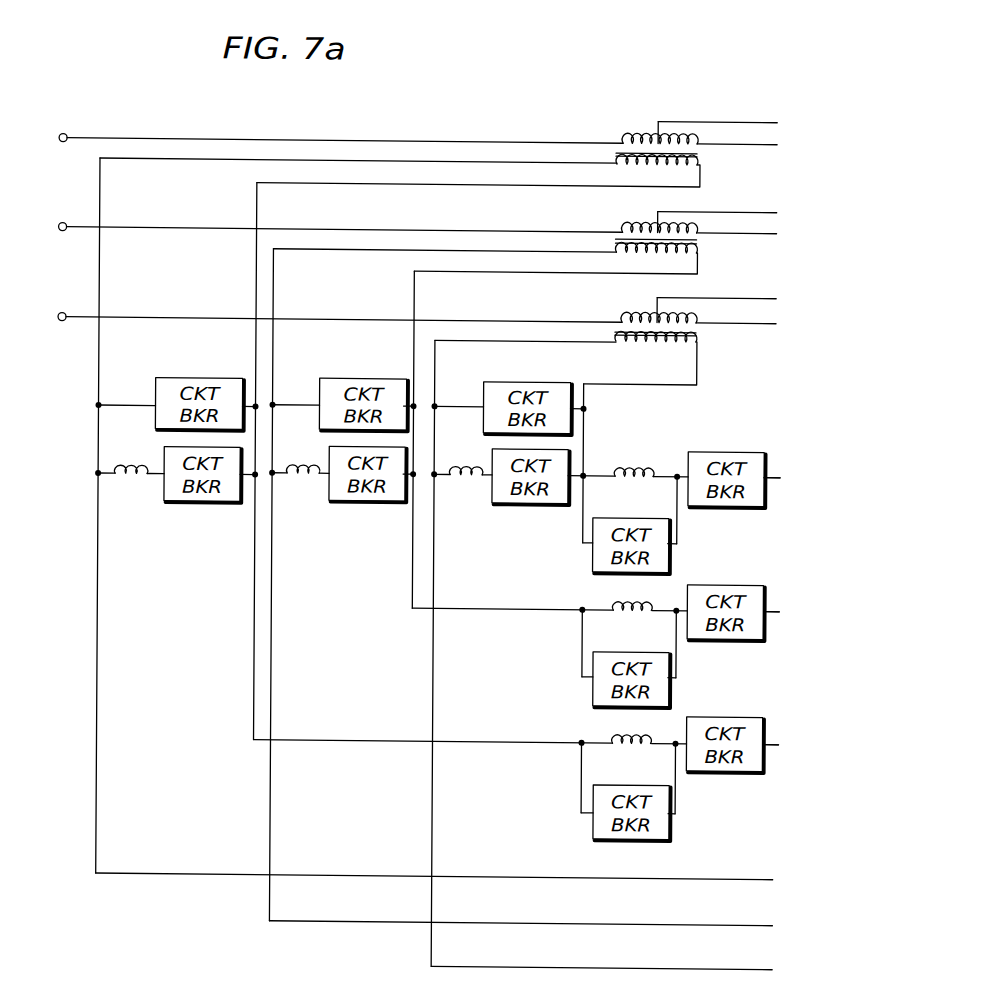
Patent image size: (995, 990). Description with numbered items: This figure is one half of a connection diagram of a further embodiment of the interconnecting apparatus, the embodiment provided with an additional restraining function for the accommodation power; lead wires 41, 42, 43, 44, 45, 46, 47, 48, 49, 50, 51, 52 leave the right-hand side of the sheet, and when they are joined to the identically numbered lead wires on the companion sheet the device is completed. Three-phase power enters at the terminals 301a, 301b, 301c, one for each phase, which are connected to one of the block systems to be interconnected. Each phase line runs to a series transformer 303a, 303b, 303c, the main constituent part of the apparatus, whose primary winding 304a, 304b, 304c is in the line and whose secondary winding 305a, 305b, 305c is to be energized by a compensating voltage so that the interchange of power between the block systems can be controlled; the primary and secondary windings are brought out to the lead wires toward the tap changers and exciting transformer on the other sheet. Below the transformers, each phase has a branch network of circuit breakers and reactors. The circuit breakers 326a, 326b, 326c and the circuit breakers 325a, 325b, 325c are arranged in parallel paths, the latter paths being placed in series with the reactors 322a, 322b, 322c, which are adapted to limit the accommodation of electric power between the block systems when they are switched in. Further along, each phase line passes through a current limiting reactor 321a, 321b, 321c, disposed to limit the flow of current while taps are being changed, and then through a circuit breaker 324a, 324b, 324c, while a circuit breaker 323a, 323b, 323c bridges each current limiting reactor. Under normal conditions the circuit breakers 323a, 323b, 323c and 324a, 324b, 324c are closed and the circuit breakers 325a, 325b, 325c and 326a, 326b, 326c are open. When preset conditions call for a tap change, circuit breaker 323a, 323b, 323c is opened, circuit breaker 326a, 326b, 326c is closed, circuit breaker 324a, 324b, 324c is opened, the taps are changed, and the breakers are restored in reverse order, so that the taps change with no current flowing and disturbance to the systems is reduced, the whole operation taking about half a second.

The terminal 301a is at (72, 122).
The terminal 301b is at (72, 212).
The terminal 301c is at (72, 302).
The series transformer 303a is at (614, 148).
The series transformer 303b is at (616, 236).
The series transformer 303c is at (616, 328).
The primary winding 304a is at (628, 134).
The primary winding 304b is at (637, 222).
The primary winding 304c is at (637, 312).
The secondary winding 305a is at (616, 161).
The secondary winding 305b is at (617, 250).
The secondary winding 305c is at (673, 338).
The lead wire 41 is at (755, 115).
The lead wire 42 is at (729, 141).
The lead wire 43 is at (762, 205).
The lead wire 44 is at (728, 232).
The lead wire 45 is at (762, 291).
The lead wire 46 is at (728, 318).
The lead wire 47 is at (773, 470).
The lead wire 48 is at (774, 604).
The lead wire 49 is at (777, 737).
The lead wire 50 is at (735, 873).
The lead wire 51 is at (732, 919).
The lead wire 52 is at (735, 963).
The current limiting reactor 321a is at (622, 732).
The current limiting reactor 321b is at (633, 598).
The current limiting reactor 321c is at (627, 468).
The reactor 322a is at (133, 480).
The reactor 322b is at (303, 478).
The reactor 322c is at (470, 478).
The circuit breaker 323a is at (596, 818).
The circuit breaker 323b is at (594, 680).
The circuit breaker 323c is at (662, 513).
The circuit breaker 324a is at (707, 767).
The circuit breaker 324b is at (740, 634).
The circuit breaker 324c is at (748, 501).
The circuit breaker 325a is at (207, 501).
The circuit breaker 325b is at (368, 499).
The circuit breaker 325c is at (530, 500).
The circuit breaker 326a is at (207, 377).
The circuit breaker 326b is at (366, 376).
The circuit breaker 326c is at (538, 378).